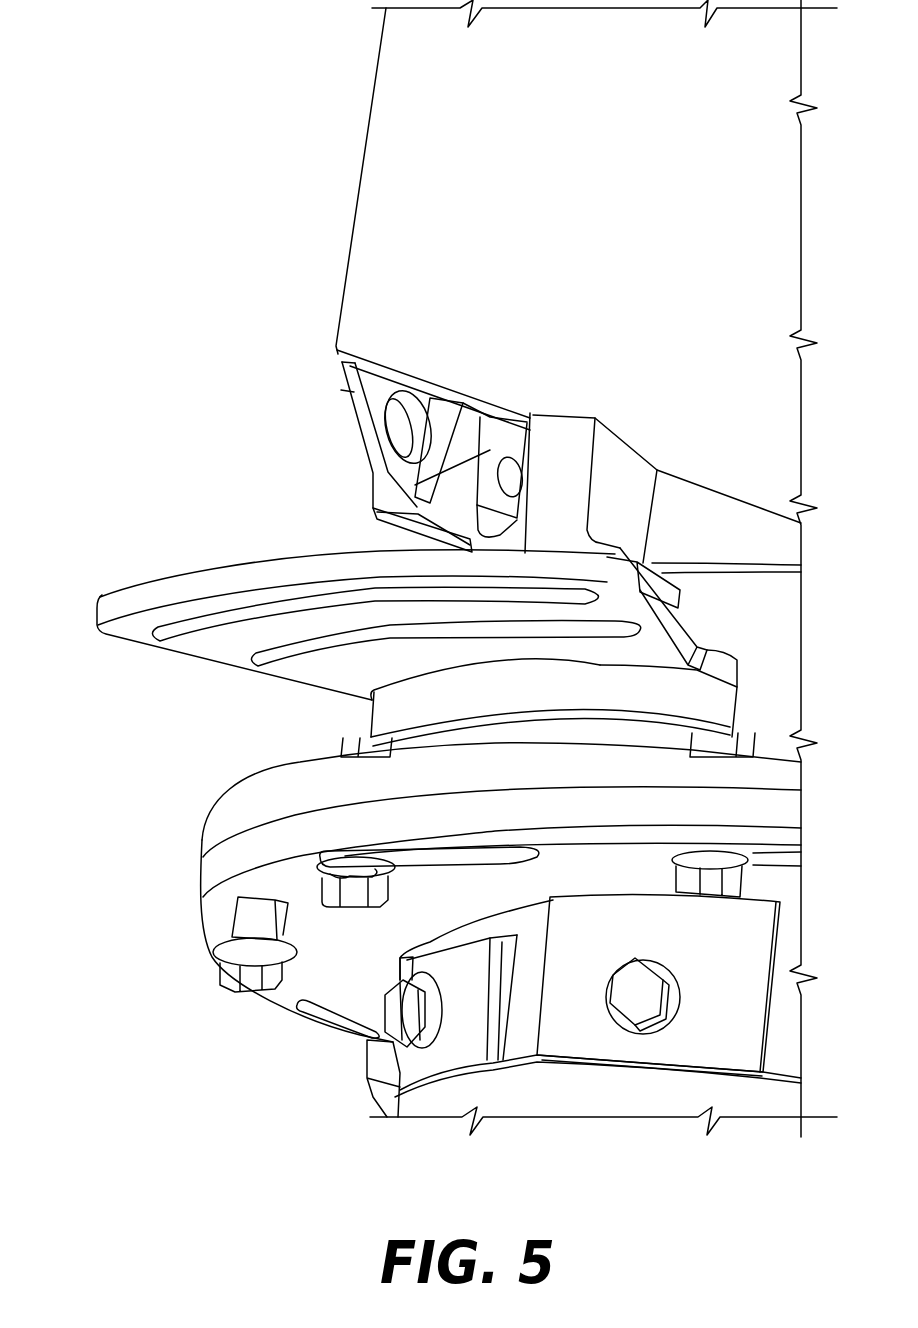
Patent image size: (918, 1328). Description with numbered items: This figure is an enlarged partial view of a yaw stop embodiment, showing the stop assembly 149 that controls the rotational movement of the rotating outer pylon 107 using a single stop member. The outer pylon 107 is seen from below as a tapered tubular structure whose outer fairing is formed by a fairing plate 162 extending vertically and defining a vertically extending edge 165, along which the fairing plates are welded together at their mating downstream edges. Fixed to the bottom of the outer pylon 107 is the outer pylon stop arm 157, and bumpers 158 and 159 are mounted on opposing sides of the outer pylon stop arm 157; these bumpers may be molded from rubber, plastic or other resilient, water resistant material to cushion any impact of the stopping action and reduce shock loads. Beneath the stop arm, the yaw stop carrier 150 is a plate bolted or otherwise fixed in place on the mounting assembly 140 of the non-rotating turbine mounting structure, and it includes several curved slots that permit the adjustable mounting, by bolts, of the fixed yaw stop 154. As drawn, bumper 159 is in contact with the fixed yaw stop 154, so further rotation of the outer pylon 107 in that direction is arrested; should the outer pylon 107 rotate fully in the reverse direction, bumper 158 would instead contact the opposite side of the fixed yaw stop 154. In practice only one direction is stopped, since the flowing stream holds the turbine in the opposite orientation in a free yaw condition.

The outer pylon 107 is at (371, 115).
The vertically extending edge 165 is at (357, 207).
The fairing plate 162 is at (612, 252).
The outer pylon stop arm 157 is at (342, 378).
The bumper 159 is at (373, 468).
The bumper 158 is at (373, 507).
The stop assembly 149 is at (232, 456).
The fixed yaw stop 154 is at (577, 474).
The yaw stop carrier 150 is at (125, 585).
The mounting assembly 140 is at (206, 843).